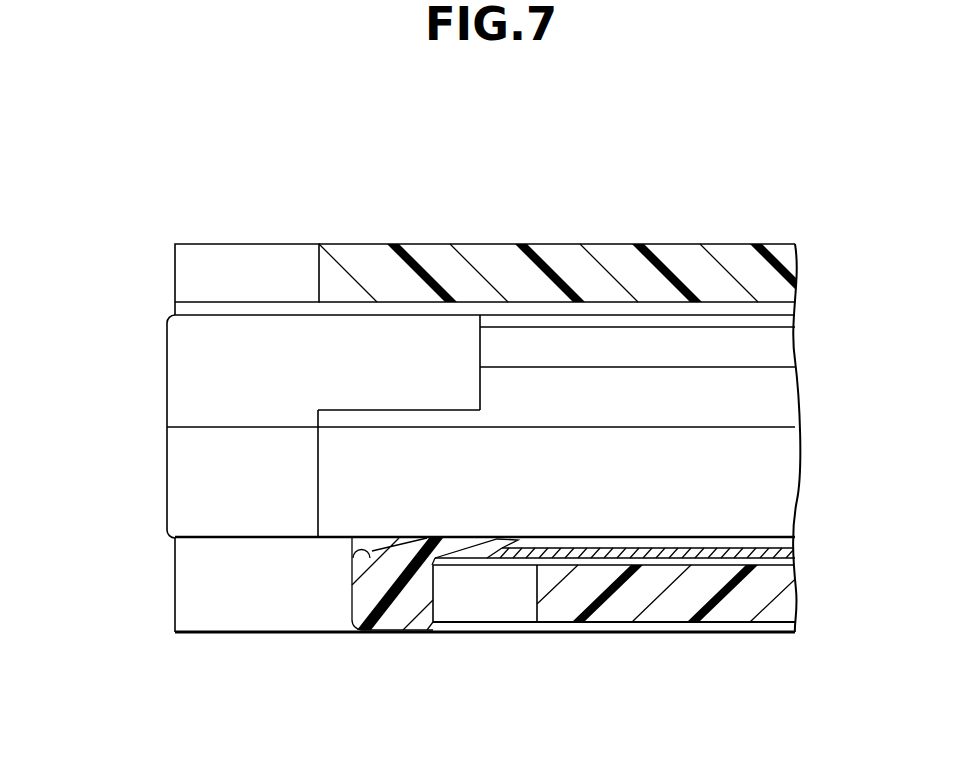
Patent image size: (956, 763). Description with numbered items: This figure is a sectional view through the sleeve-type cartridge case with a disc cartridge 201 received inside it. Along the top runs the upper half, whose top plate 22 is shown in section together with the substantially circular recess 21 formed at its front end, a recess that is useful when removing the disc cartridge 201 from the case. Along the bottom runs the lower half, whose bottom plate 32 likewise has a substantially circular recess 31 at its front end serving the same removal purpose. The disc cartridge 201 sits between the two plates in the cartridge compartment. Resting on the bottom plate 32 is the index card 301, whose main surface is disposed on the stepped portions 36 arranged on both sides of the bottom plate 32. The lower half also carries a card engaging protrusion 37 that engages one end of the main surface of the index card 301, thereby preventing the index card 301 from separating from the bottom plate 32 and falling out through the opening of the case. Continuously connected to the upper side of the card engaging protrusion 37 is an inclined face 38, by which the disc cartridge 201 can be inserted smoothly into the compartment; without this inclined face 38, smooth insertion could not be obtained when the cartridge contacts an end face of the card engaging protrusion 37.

The recess 21 is at (227, 263).
The top plate 22 is at (497, 262).
The disc cartridge 201 is at (162, 388).
The index card 301 is at (763, 548).
The stepped portions 36 is at (763, 560).
The card engaging protrusion 37 is at (463, 545).
The inclined face 38 is at (347, 548).
The recess 31 is at (218, 612).
The bottom plate 32 is at (618, 602).